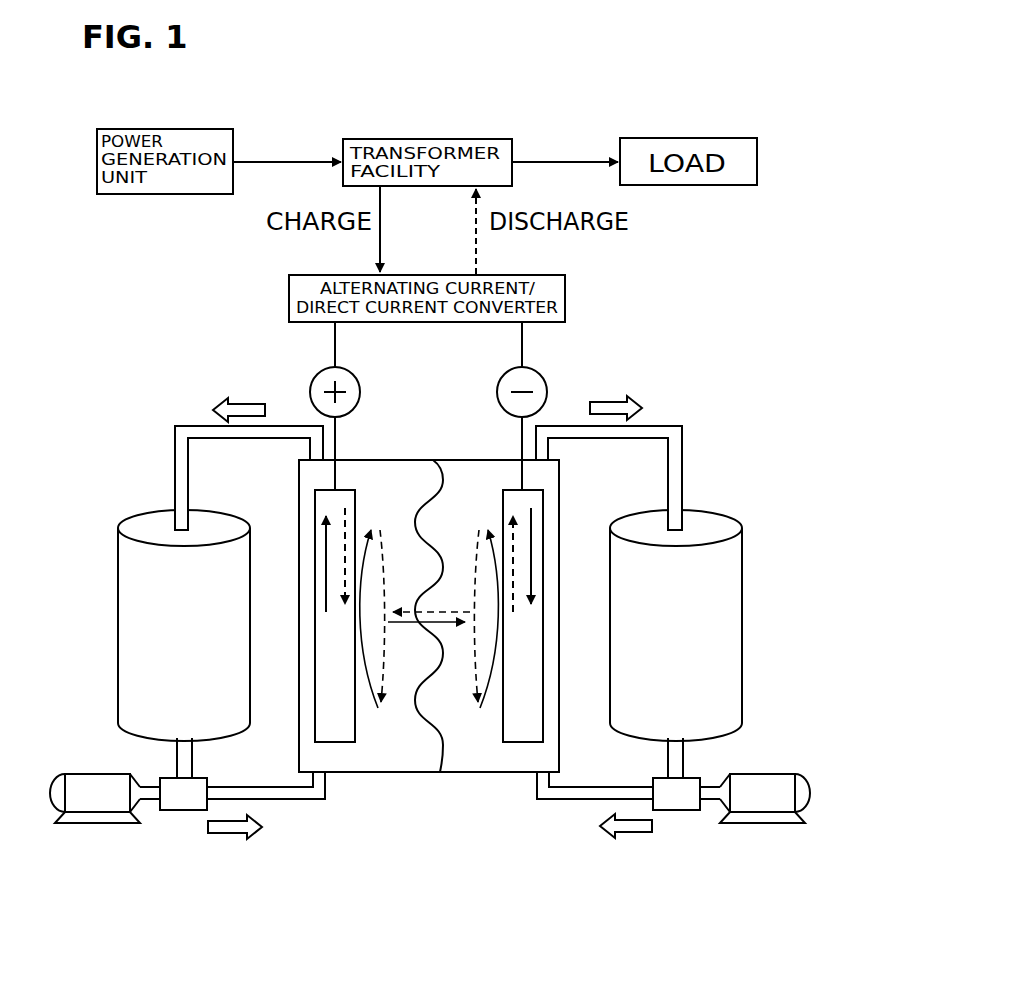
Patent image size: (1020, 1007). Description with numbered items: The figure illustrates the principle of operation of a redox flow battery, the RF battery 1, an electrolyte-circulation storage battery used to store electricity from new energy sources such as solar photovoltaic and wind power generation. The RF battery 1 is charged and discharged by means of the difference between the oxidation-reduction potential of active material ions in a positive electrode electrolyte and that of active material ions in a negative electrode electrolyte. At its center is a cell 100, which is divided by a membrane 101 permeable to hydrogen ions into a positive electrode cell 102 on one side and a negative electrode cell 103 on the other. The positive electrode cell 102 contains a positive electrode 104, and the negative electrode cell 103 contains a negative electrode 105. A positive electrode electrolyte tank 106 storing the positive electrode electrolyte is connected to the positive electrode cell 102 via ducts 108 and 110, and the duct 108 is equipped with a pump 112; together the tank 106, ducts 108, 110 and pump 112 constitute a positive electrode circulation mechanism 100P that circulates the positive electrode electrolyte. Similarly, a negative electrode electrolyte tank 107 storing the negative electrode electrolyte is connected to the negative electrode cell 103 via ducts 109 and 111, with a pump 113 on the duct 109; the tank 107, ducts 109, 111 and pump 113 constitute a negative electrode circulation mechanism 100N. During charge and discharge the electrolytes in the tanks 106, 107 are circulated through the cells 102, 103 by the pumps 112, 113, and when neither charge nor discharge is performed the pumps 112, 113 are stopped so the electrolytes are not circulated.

The RF battery 1 is at (724, 354).
The cell 100 is at (432, 693).
The positive electrode circulation mechanism 100P is at (129, 838).
The negative electrode circulation mechanism 100N is at (731, 838).
The membrane 101 is at (441, 756).
The positive electrode cell 102 is at (368, 775).
The negative electrode cell 103 is at (490, 775).
The positive electrode 104 is at (312, 735).
The negative electrode 105 is at (548, 735).
The positive electrode electrolyte tank 106 is at (133, 520).
The negative electrode electrolyte tank 107 is at (722, 520).
The duct 108 is at (288, 800).
The duct 109 is at (573, 800).
The duct 110 is at (190, 425).
The duct 111 is at (667, 425).
The pump 112 is at (78, 773).
The pump 113 is at (782, 773).